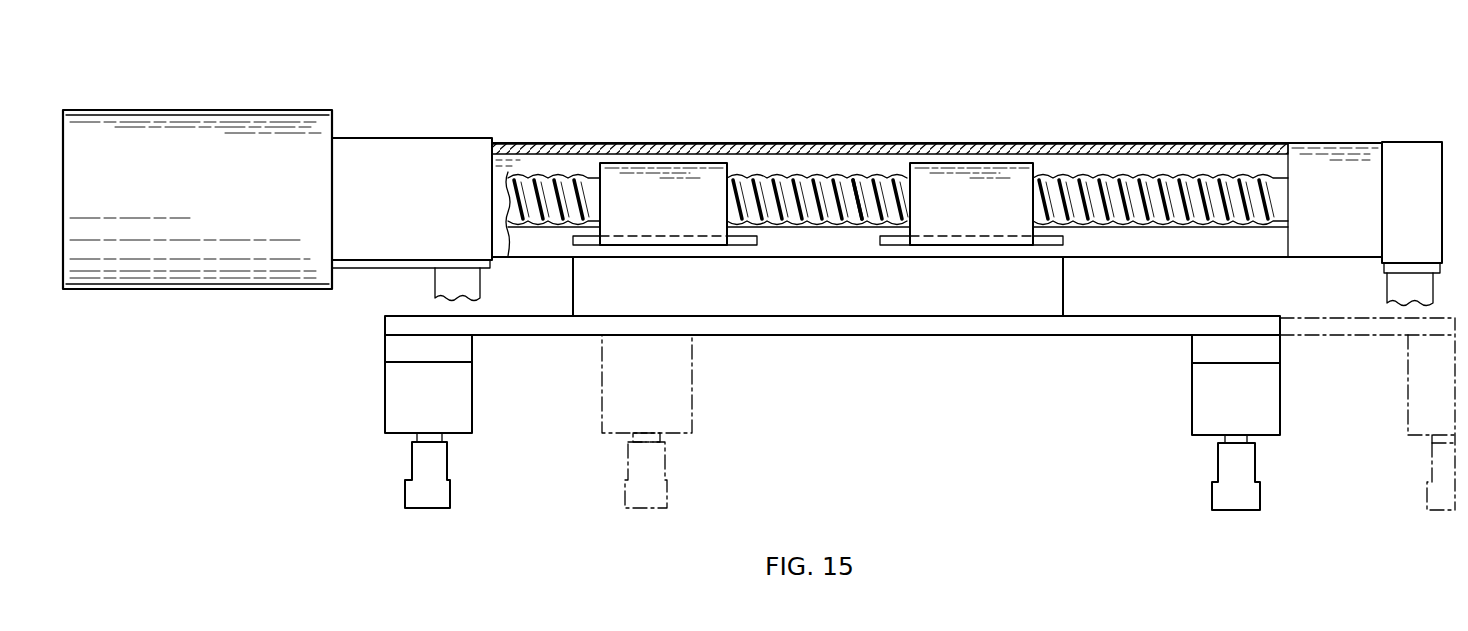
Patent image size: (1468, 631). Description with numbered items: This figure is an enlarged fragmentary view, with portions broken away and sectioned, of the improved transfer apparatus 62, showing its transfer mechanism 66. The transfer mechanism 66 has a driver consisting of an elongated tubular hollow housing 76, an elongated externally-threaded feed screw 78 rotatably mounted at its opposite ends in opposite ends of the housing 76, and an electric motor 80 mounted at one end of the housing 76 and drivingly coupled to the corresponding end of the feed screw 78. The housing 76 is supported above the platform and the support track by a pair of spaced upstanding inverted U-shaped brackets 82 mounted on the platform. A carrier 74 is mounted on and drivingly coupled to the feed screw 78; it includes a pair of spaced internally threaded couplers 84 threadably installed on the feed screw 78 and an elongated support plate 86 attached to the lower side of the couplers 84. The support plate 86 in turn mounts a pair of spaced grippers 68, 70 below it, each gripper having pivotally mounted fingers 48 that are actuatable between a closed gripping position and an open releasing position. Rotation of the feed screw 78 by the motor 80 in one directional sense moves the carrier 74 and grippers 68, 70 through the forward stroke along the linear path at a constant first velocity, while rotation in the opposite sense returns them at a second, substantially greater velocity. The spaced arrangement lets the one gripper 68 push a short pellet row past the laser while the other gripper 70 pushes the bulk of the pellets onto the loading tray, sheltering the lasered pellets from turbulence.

The fingers 48 is at (450, 497).
The improved transfer apparatus 62 is at (1160, 122).
The transfer mechanism 66 is at (1023, 344).
The gripper 68 is at (472, 391).
The gripper 70 is at (1192, 383).
The carrier 74 is at (795, 343).
The housing 76 is at (782, 150).
The feed screw 78 is at (869, 178).
The electric motor 80 is at (243, 110).
The brackets 82 is at (477, 287).
The couplers 84 is at (662, 173).
The support plate 86 is at (905, 300).